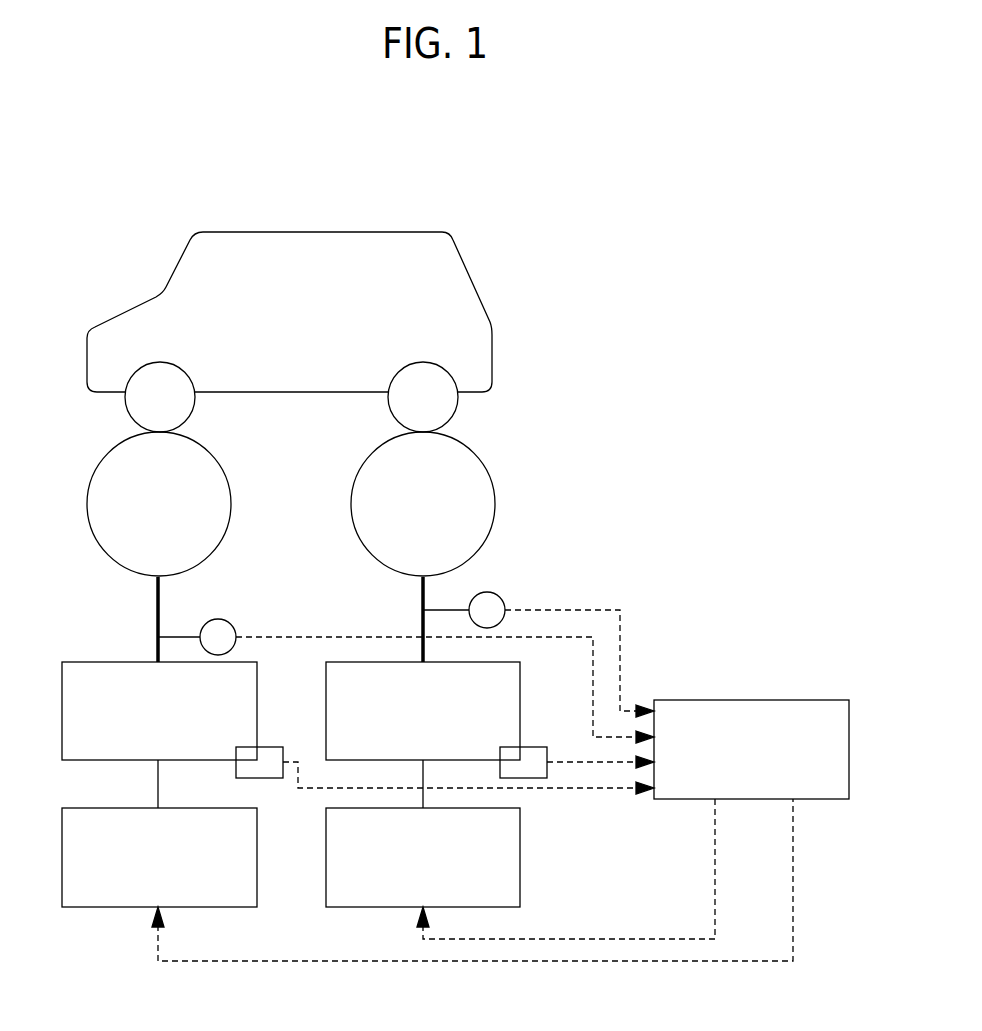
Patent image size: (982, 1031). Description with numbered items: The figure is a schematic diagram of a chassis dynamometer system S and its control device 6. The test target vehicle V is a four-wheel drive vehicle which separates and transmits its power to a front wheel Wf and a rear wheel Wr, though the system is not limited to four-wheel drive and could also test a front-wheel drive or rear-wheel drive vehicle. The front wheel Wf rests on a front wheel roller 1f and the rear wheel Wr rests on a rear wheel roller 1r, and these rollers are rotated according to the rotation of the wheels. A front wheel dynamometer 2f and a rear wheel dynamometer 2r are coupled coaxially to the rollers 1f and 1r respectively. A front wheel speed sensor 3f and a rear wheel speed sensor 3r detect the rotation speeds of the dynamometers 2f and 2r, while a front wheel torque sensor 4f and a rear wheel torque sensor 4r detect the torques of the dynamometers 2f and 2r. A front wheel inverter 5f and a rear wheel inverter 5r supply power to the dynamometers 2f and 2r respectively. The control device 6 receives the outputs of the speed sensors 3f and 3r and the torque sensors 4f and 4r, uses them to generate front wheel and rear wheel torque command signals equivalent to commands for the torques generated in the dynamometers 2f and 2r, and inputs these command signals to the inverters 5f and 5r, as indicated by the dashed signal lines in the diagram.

The chassis dynamometer system S is at (72, 201).
The test target vehicle V is at (447, 232).
The front wheel Wf is at (186, 410).
The rear wheel Wr is at (448, 410).
The front wheel roller 1f is at (223, 500).
The rear wheel roller 1r is at (485, 500).
The front wheel dynamometer 2f is at (245, 684).
The rear wheel dynamometer 2r is at (513, 684).
The front wheel speed sensor 3f is at (222, 630).
The rear wheel speed sensor 3r is at (500, 598).
The front wheel torque sensor 4f is at (272, 752).
The rear wheel torque sensor 4r is at (533, 752).
The front wheel inverter 5f is at (247, 832).
The rear wheel inverter 5r is at (513, 832).
The control device 6 is at (828, 700).